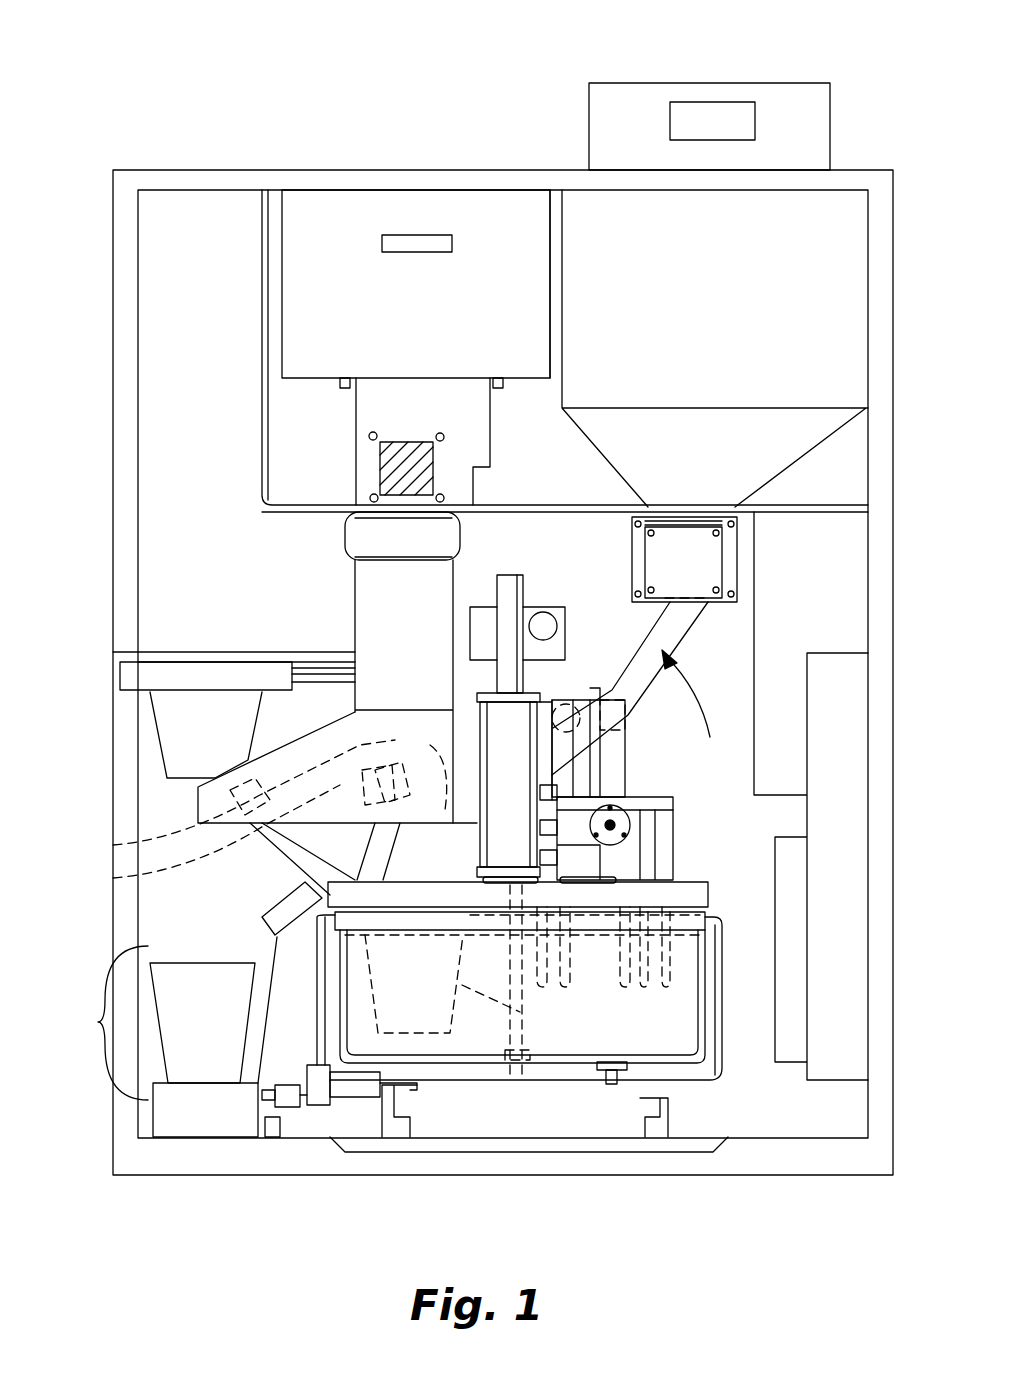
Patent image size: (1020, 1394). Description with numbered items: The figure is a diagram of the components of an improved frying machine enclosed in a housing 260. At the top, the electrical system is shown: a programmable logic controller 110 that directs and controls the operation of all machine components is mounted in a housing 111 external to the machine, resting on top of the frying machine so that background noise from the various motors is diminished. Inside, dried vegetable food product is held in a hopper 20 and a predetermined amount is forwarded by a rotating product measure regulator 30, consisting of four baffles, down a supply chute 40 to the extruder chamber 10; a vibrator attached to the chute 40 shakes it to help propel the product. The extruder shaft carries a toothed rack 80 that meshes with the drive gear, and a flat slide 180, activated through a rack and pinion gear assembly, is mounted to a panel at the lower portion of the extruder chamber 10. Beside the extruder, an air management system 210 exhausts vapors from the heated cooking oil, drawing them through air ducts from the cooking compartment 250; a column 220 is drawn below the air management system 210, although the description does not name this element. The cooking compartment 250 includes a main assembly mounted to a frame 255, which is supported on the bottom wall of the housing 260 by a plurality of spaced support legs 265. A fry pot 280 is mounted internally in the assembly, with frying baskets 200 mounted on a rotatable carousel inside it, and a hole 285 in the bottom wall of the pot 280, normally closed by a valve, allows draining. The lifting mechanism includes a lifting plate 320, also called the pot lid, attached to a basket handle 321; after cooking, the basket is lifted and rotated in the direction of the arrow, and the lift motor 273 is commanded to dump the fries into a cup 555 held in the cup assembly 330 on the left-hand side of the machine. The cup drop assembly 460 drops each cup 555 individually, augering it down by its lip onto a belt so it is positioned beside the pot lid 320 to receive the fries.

The extruder chamber 10 is at (500, 748).
The hopper 20 is at (828, 250).
The product measure regulator 30 is at (682, 548).
The supply chute 40 is at (640, 688).
The rack 80 is at (522, 590).
The programmable logic controller 110 is at (707, 102).
The housing 111 is at (612, 125).
The flat slide 180 is at (570, 880).
The frying basket 200 is at (523, 1018).
The air management system 210 is at (352, 245).
The column 220 is at (395, 620).
The cooking compartment 250 is at (476, 1166).
The frame 255 is at (726, 1060).
The housing 260 is at (808, 1175).
The support legs 265 is at (393, 1095).
The lift motor 273 is at (411, 768).
The fry pot 280 is at (705, 912).
The hole 285 is at (598, 1070).
The lifting plate 320 is at (197, 820).
The basket handle 321 is at (180, 870).
The cup assembly 330 is at (229, 1009).
The cup drop assembly 460 is at (262, 675).
The cup 555 is at (178, 738).